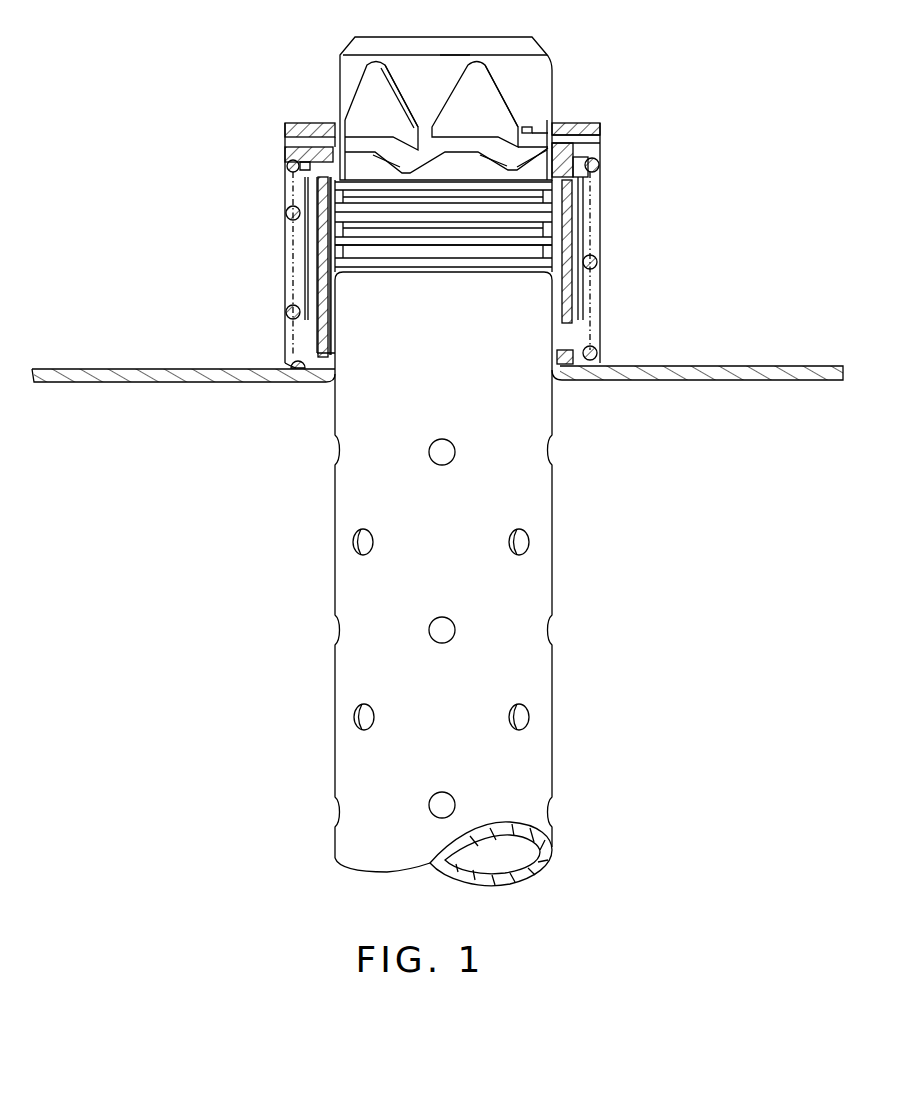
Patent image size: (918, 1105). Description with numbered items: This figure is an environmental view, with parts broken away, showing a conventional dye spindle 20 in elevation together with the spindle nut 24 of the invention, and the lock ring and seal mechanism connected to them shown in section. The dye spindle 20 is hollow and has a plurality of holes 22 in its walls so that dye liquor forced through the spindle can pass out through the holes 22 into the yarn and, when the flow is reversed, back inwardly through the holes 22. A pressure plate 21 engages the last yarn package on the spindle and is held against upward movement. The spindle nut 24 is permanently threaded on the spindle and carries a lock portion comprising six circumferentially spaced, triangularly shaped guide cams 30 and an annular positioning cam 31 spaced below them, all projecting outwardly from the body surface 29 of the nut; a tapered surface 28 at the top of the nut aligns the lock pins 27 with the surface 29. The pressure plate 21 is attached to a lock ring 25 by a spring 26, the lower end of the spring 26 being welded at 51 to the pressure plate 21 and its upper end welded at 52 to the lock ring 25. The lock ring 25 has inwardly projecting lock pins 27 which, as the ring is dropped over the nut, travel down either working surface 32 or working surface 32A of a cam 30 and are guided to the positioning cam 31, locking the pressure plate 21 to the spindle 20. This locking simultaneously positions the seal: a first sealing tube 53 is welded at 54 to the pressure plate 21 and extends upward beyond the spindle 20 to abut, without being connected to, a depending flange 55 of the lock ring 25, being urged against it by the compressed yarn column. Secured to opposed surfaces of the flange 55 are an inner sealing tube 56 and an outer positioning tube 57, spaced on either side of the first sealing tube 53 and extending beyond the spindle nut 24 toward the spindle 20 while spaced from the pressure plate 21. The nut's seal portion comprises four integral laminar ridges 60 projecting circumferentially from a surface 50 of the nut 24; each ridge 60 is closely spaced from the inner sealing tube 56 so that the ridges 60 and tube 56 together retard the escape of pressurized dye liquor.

The dye spindle 20 is at (562, 562).
The pressure plate 21 is at (712, 366).
The holes 22 is at (520, 713).
The spindle nut 24 is at (482, 91).
The lock ring 25 is at (597, 133).
The spring 26 is at (598, 170).
The lock pins 27 is at (313, 142).
The tapered surface 28 is at (373, 45).
The surface of the spindle nut 29 is at (450, 56).
The guide cams 30 is at (382, 90).
The positioning cam 31 is at (454, 162).
The working surface 32 is at (511, 100).
The working surface 32A is at (447, 103).
The surface of the nut 50 is at (443, 240).
The weld 51 is at (286, 364).
The weld 52 is at (291, 162).
The first sealing tube 53 is at (325, 275).
The weld 54 is at (303, 370).
The depending flange 55 is at (305, 170).
The inner sealing tube 56 is at (330, 243).
The outer positioning tube 57 is at (306, 228).
The laminar ridges 60 is at (486, 246).